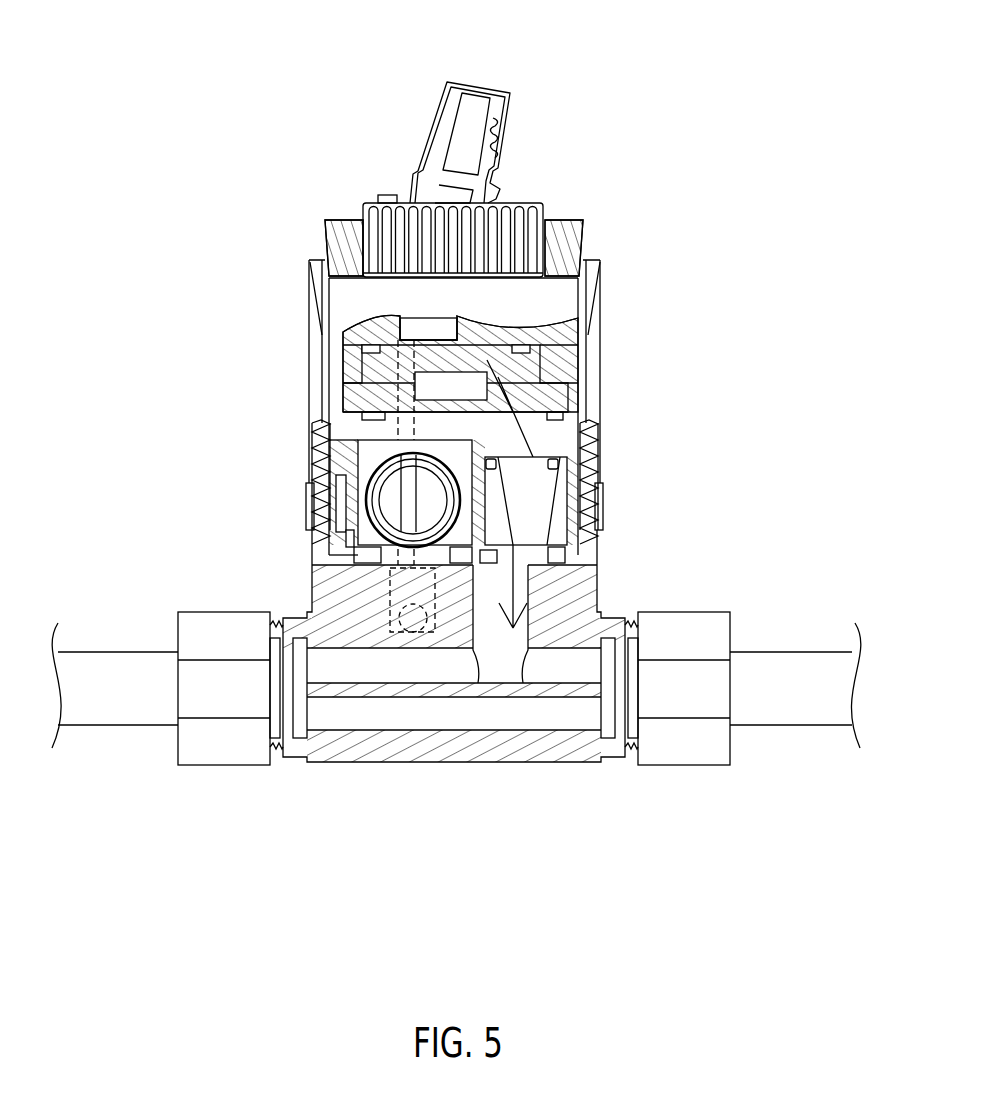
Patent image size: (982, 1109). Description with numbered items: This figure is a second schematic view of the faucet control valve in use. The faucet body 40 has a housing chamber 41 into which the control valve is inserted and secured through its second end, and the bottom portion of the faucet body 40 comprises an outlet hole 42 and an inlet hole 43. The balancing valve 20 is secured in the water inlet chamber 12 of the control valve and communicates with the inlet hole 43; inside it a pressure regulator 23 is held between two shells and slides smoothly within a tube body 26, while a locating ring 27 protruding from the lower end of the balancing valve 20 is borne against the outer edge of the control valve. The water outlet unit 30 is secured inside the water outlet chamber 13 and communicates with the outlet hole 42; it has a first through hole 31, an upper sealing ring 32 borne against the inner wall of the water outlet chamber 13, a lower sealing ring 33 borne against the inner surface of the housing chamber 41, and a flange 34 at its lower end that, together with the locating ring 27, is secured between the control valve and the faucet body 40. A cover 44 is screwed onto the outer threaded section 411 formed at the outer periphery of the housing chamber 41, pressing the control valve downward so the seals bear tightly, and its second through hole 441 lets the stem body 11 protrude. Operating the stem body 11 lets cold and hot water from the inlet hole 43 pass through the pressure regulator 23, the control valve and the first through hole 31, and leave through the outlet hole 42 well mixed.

The stem body 11 is at (488, 112).
The water inlet chamber 12 is at (358, 440).
The water outlet chamber 13 is at (590, 517).
The balancing valve 20 is at (376, 432).
The pressure regulator 23 is at (362, 508).
The tube body 26 is at (394, 505).
The locating ring 27 is at (339, 553).
The water outlet unit 30 is at (597, 465).
The first through hole 31 is at (540, 378).
The upper sealing ring 32 is at (580, 432).
The lower sealing ring 33 is at (562, 583).
The flange 34 is at (560, 557).
The faucet body 40 is at (557, 768).
The housing chamber 41 is at (309, 527).
The outer threaded section 411 is at (603, 490).
The outlet hole 42 is at (472, 627).
The inlet hole 43 is at (423, 540).
The cover 44 is at (333, 252).
The second through hole 441 is at (363, 252).